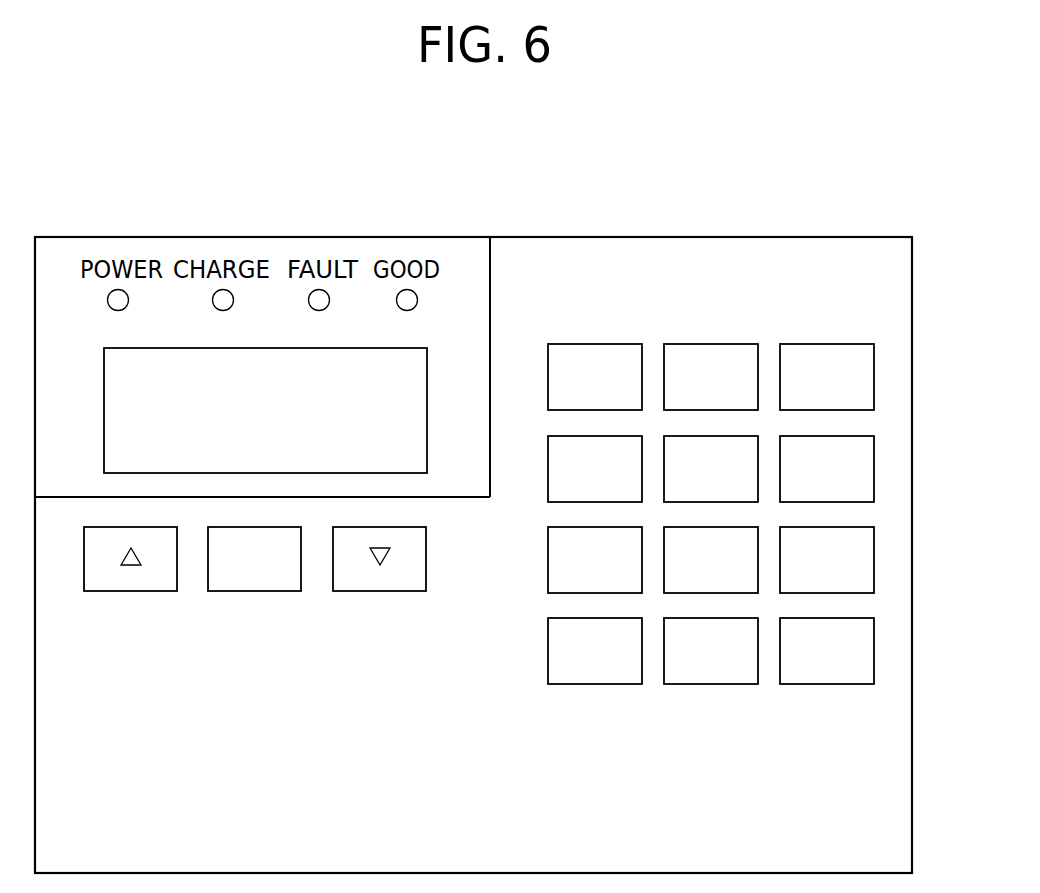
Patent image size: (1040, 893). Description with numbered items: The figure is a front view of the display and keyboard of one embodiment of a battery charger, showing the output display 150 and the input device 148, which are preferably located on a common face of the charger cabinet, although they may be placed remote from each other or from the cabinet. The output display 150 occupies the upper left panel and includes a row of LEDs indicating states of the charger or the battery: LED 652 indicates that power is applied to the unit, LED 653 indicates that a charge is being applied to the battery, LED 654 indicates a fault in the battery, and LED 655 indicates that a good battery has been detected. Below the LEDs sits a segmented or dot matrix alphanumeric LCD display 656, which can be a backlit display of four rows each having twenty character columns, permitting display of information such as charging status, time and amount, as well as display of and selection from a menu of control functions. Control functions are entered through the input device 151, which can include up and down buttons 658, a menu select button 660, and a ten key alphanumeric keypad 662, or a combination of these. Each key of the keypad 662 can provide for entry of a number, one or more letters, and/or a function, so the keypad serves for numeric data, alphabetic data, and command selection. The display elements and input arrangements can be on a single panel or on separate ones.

The input device 148 is at (692, 237).
The output display 150 is at (247, 237).
The input device 151 is at (547, 565).
The LED 652 is at (110, 307).
The LED 653 is at (215, 307).
The LED 654 is at (311, 307).
The LED 655 is at (399, 307).
The alphanumeric LCD display 656 is at (288, 427).
The up down buttons 658 is at (130, 591).
The menu select button 660 is at (256, 591).
The ten key alphanumeric keypad 662 is at (893, 390).